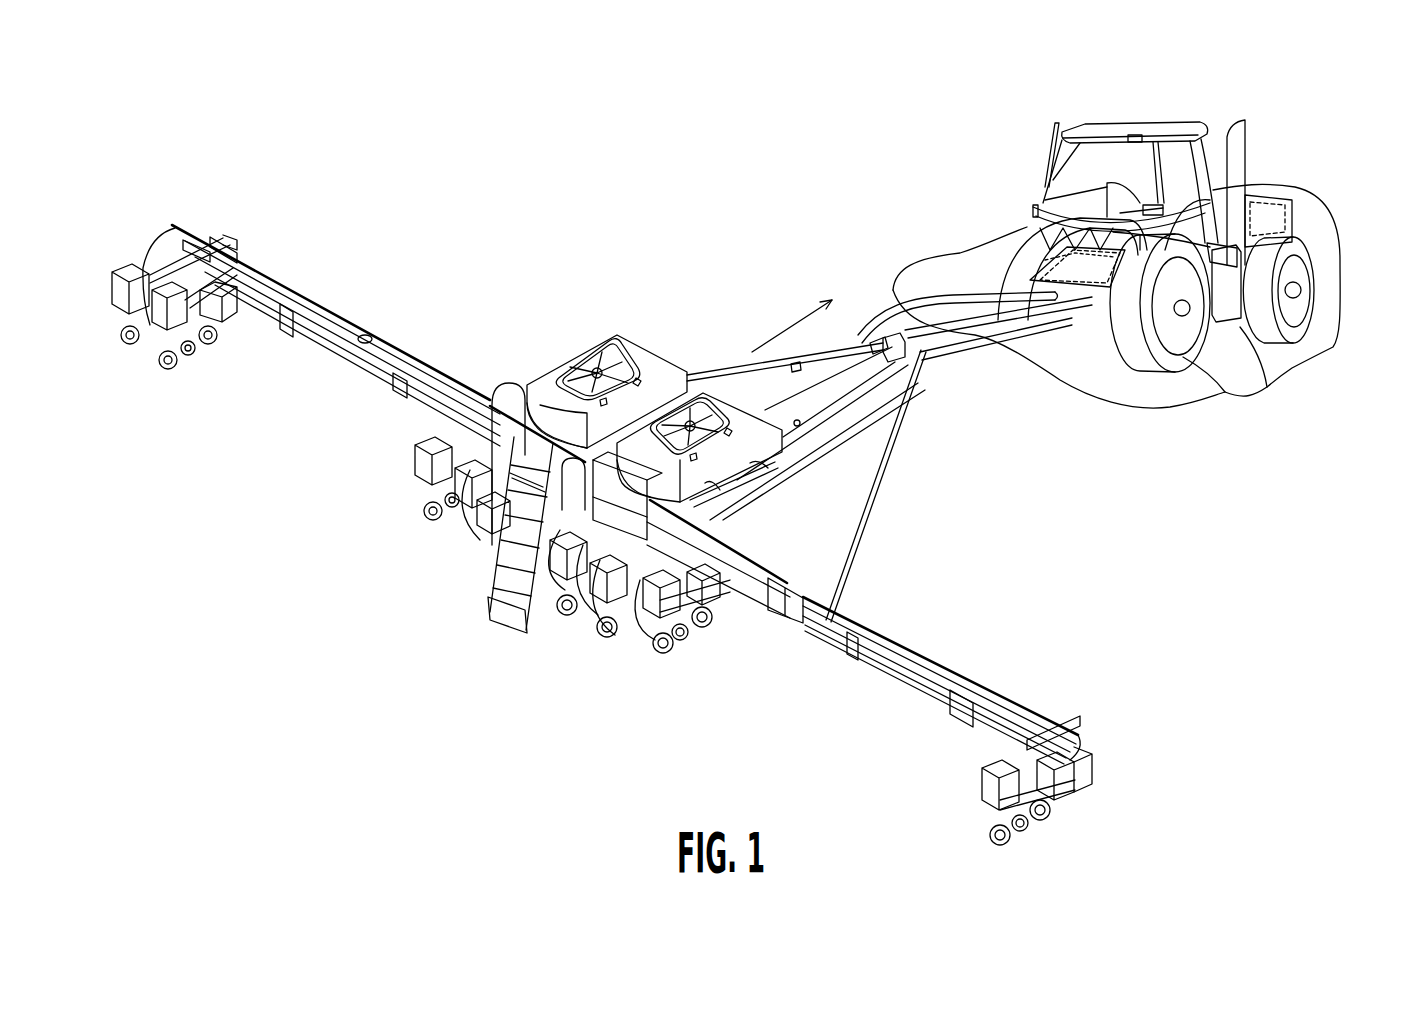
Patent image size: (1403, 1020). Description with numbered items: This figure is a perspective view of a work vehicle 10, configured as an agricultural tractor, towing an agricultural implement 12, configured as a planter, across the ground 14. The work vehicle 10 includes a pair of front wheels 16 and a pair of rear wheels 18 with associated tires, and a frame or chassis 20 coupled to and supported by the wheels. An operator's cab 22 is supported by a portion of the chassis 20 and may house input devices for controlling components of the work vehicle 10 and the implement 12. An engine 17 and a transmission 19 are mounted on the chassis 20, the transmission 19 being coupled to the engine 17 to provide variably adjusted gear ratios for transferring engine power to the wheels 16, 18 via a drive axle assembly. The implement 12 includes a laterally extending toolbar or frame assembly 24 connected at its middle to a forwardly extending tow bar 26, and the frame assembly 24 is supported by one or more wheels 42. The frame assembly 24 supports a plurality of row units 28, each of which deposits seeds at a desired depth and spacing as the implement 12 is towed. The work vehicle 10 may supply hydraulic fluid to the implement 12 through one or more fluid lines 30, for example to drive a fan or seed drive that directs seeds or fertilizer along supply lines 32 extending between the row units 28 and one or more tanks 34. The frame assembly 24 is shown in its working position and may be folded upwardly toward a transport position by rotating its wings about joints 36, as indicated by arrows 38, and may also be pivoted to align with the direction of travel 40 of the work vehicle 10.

The work vehicle 10 is at (1274, 187).
The agricultural implement 12 is at (502, 365).
The ground 14 is at (1314, 205).
The front wheels 16 is at (1313, 332).
The engine 17 is at (1285, 217).
The rear wheels 18 is at (1188, 355).
The transmission 19 is at (1050, 267).
The chassis 20 is at (1240, 342).
The operator's cab 22 is at (1187, 158).
The frame assembly 24 is at (862, 623).
The tow bar 26 is at (873, 330).
The row units 28 is at (140, 258).
The fluid lines 30 is at (977, 358).
The supply lines 32 is at (390, 343).
The tanks 34 is at (640, 360).
The joints 36 is at (507, 383).
The arrows 38 is at (393, 237).
The direction of travel 40 is at (432, 542).
The wheels 42 is at (610, 640).